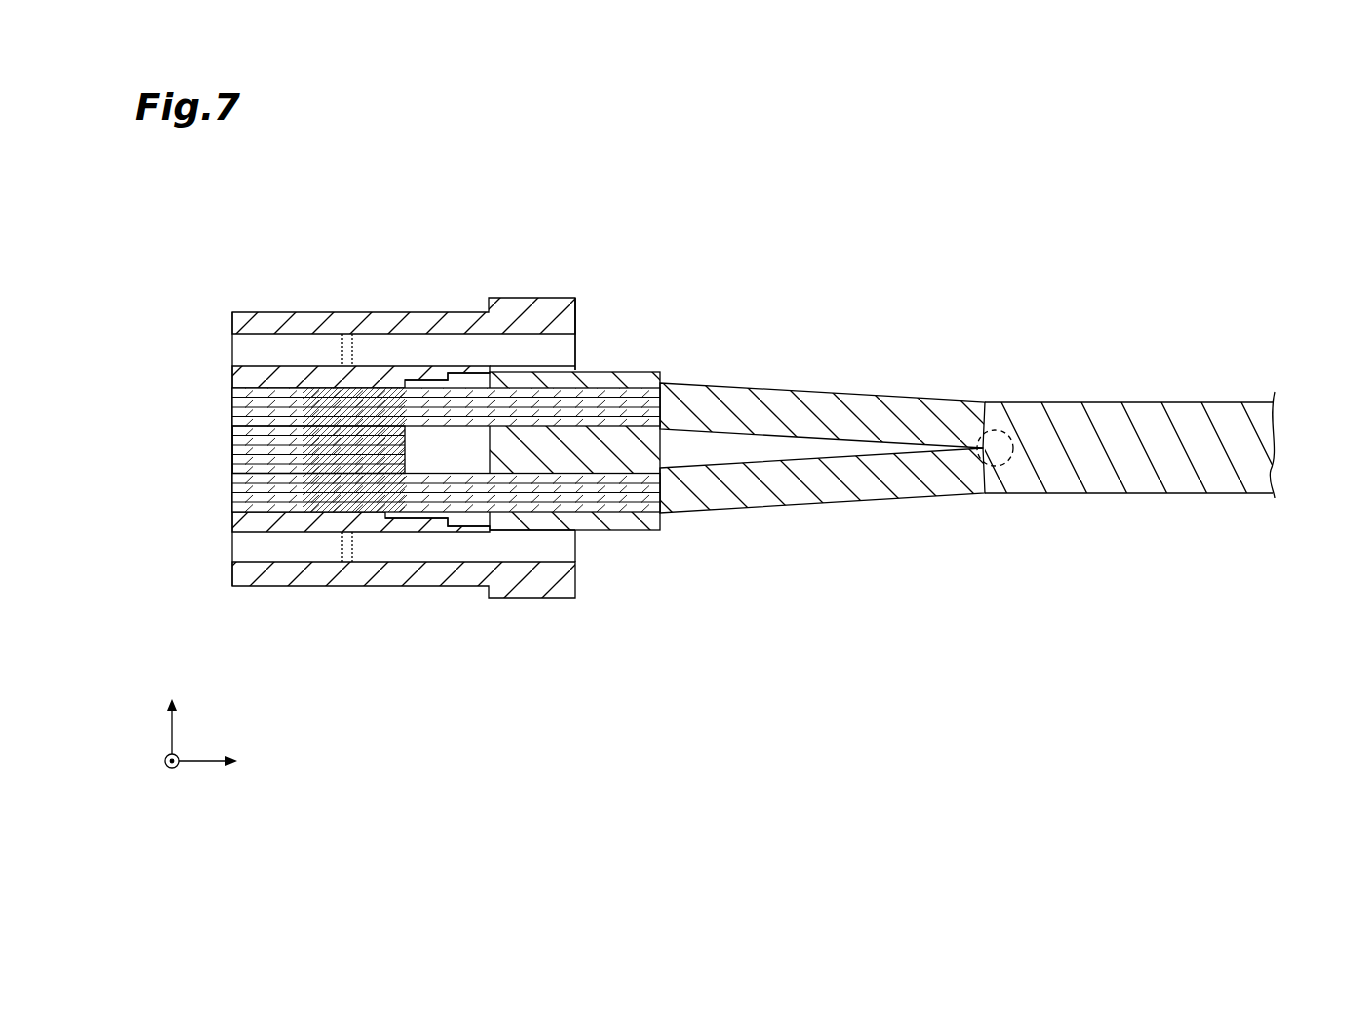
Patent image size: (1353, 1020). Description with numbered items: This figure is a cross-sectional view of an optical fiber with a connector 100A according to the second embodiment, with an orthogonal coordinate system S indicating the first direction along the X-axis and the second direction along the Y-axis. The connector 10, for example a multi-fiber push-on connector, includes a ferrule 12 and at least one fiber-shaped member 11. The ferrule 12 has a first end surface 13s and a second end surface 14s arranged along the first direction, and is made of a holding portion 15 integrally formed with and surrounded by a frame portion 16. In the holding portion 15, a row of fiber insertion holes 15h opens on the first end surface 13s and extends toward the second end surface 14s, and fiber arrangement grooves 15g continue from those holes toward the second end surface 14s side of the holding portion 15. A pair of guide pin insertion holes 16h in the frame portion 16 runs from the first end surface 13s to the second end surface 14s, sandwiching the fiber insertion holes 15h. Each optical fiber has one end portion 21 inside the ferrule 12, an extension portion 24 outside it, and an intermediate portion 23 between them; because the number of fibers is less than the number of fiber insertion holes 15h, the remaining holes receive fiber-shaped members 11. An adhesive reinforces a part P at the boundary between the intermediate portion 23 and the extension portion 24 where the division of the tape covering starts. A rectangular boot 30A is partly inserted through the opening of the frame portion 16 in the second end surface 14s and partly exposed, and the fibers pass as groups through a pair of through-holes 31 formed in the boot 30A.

The optical fiber with a connector 100A is at (1192, 172).
The connector 10 is at (541, 274).
The fiber-shaped member 11 is at (235, 431).
The ferrule 12 is at (497, 297).
The first end surface 13s is at (232, 311).
The second end surface 14s is at (578, 316).
The holding portion 15 is at (358, 385).
The fiber arrangement groove 15g is at (379, 380).
The fiber insertion hole 15h is at (234, 392).
The frame portion 16 is at (463, 318).
The guide pin insertion hole 16h is at (288, 338).
The one end portion 21 is at (467, 437).
The intermediate portion 23 is at (784, 402).
The extension portion 24 is at (1190, 402).
The boot 30A is at (643, 522).
The through-hole 31 is at (606, 388).
The part P is at (1003, 428).
The orthogonal coordinate system S is at (171, 735).